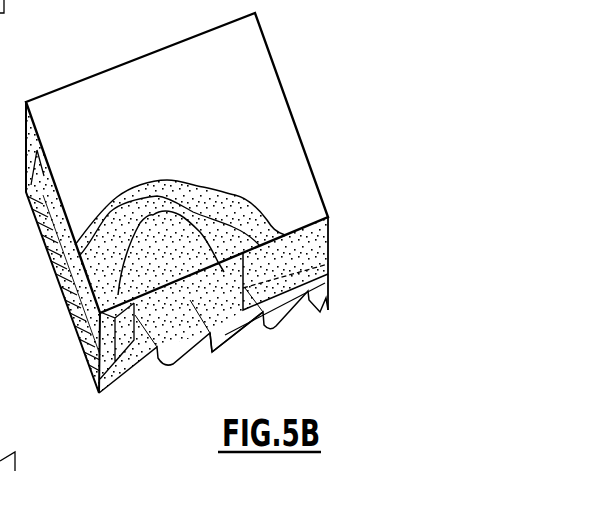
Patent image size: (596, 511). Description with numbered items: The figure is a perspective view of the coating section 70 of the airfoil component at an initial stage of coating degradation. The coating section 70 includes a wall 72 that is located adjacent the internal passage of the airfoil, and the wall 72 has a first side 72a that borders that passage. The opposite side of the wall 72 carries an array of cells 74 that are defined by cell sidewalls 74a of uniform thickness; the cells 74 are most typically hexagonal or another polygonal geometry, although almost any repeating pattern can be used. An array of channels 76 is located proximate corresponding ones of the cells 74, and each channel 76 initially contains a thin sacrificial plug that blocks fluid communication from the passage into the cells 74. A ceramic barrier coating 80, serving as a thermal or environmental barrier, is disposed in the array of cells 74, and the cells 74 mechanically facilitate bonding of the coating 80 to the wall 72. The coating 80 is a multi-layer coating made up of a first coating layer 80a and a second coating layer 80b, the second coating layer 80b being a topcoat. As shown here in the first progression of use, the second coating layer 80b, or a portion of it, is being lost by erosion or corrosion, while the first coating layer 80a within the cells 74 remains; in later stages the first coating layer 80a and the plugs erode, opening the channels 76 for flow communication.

The coating section 70 is at (57, 321).
The wall 72 is at (133, 384).
The first side 72a is at (250, 340).
The array of cells 74 is at (160, 315).
The cell sidewalls 74a is at (205, 272).
The array of channels 76 is at (208, 357).
The coating 80 is at (278, 148).
The first coating layer 80a is at (328, 266).
The second coating layer 80b is at (316, 249).